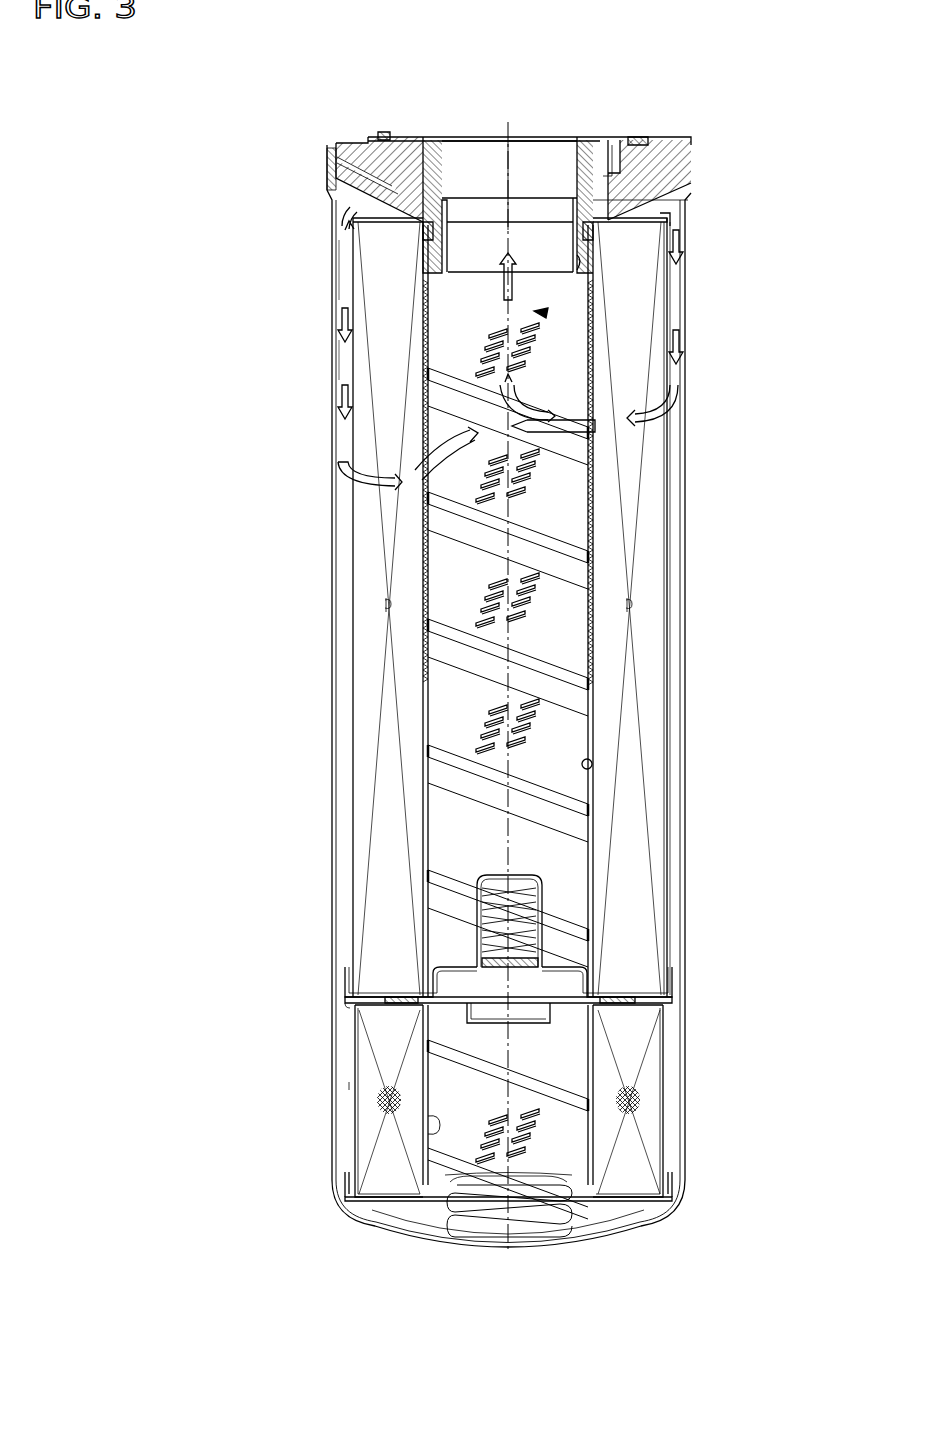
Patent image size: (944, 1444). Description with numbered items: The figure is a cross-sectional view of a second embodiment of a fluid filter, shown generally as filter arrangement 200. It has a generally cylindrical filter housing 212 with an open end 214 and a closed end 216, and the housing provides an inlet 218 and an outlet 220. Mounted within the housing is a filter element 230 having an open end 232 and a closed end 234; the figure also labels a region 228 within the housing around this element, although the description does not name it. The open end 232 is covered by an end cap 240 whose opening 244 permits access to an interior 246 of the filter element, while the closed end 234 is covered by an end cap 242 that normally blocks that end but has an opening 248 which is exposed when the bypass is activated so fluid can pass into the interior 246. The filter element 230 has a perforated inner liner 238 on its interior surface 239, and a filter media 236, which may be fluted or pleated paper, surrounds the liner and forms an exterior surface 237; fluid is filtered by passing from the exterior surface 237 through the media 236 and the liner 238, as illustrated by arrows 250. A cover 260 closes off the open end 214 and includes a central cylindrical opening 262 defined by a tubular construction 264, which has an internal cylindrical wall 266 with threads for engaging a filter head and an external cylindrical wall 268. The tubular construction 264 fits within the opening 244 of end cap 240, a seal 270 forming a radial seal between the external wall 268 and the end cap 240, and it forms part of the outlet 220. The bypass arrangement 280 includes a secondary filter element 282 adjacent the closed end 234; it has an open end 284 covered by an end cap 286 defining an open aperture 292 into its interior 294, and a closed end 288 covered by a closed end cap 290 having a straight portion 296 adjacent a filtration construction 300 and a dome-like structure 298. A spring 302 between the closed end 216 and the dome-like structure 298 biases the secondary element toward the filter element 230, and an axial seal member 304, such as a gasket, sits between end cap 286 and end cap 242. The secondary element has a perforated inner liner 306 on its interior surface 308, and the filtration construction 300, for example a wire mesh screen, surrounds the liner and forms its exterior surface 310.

The filter arrangement 200 is at (283, 216).
The filter housing 212 is at (336, 387).
The open end 214 is at (405, 106).
The closed end 216 is at (394, 1235).
The inlet 218 is at (615, 145).
The outlet 220 is at (493, 155).
The outer annular passage 228 is at (347, 583).
The filter element 230 is at (653, 522).
The open end 232 is at (548, 311).
The closed end 234 is at (555, 955).
The filter media 236 is at (365, 622).
The exterior surface 237 is at (667, 829).
The perforated inner liner 238 is at (573, 733).
The interior surface 239 is at (594, 767).
The end cap 240 is at (650, 216).
The end cap 242 is at (537, 986).
The opening 244 is at (528, 228).
The interior 246 is at (581, 391).
The opening 248 is at (537, 1013).
The arrows 250 is at (339, 480).
The cover 260 is at (650, 143).
The central cylindrical opening 262 is at (462, 140).
The tubular construction 264 is at (577, 258).
The internal cylindrical wall 266 is at (505, 300).
The external cylindrical wall 268 is at (403, 320).
The seal 270 is at (584, 236).
The bypass arrangement 280 is at (273, 1000).
The secondary filter element 282 is at (672, 1083).
The open end 284 is at (447, 1040).
The end cap 286 is at (385, 1003).
The closed end 288 is at (583, 1190).
The closed end cap 290 is at (623, 1203).
The open aperture 292 is at (540, 1035).
The interior 294 is at (480, 1105).
The straight portion 296 is at (383, 1203).
The dome-like structure 298 is at (583, 1195).
The filtration construction 300 is at (363, 1111).
The spring 302 is at (470, 1233).
The axial seal member 304 is at (380, 1000).
The perforated inner liner 306 is at (430, 1105).
The interior surface 308 is at (425, 1137).
The exterior surface 310 is at (354, 1083).